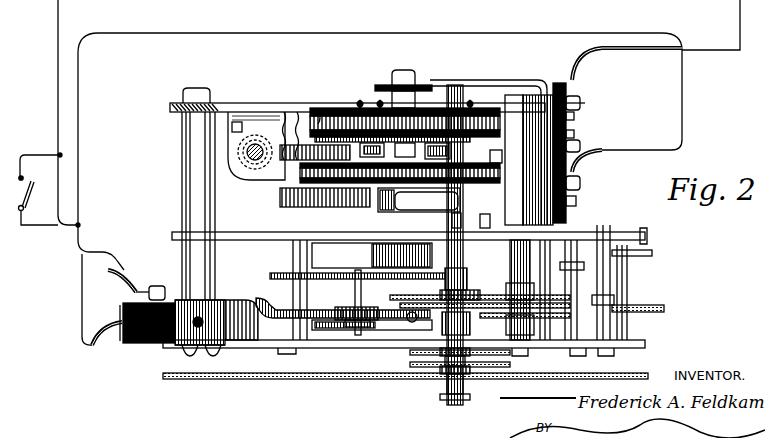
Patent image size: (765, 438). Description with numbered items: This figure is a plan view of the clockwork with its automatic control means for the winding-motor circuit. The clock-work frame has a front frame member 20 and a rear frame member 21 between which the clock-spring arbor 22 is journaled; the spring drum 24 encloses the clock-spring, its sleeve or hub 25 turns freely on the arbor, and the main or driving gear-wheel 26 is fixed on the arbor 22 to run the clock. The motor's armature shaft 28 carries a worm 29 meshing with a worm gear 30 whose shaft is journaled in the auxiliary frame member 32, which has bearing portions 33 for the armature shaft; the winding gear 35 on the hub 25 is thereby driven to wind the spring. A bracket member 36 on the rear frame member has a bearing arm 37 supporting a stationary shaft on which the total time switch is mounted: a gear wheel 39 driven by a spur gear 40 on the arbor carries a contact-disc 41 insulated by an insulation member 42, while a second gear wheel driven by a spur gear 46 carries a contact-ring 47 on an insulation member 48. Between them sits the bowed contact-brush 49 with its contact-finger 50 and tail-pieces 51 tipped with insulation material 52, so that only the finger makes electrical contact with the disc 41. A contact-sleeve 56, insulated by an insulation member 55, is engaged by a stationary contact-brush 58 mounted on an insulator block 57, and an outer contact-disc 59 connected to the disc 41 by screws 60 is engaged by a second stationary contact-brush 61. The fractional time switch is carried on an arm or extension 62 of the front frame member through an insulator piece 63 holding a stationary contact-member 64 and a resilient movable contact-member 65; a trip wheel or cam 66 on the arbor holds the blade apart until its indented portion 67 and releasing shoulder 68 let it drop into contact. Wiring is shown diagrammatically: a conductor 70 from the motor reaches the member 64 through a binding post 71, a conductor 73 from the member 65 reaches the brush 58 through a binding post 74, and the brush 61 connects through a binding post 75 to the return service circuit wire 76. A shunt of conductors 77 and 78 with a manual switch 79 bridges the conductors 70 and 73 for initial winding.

The front frame member 20 is at (592, 348).
The rear frame member 21 is at (236, 231).
The clock-spring arbor 22 is at (355, 294).
The spring drum 24 is at (322, 253).
The sleeve or hub 25 is at (350, 212).
The main or driving gear-wheel 26 is at (270, 276).
The armature shaft 28 is at (247, 153).
The worm 29 is at (240, 162).
The worm gear 30 is at (284, 112).
The auxiliary frame member 32 is at (223, 102).
The bearing portions 33 is at (236, 126).
The winding gear 35 is at (281, 206).
The bracket member 36 is at (566, 118).
The bearing arm 37 is at (425, 85).
The gear wheel 39 is at (545, 90).
The spur gear 40 is at (346, 108).
The contact-disc 41 is at (496, 146).
The insulation member 42 is at (572, 112).
The spur gear 46 is at (297, 112).
The contact-ring 47 is at (420, 143).
The insulation member 48 is at (568, 133).
The contact-brush 49 is at (462, 140).
The contact-finger 50 is at (440, 143).
The tail-pieces 51 is at (362, 100).
The insulation material 52 is at (382, 100).
The insulation member 55 is at (488, 210).
The contact-sleeve 56 is at (458, 210).
The insulator block 57 is at (580, 147).
The stationary contact-brush 58 is at (568, 200).
The outer contact-disc 59 is at (535, 80).
The screws 60 is at (320, 108).
The second stationary contact-brush 61 is at (510, 130).
The arm or extension 62 is at (252, 349).
The insulator piece 63 is at (142, 346).
The stationary contact-member 64 is at (283, 309).
The movable contact-member 65 is at (286, 350).
The trip wheel or cam 66 is at (346, 328).
The indented portion 67 is at (410, 323).
The trip or releasing shoulder 68 is at (395, 332).
The conductor 70 is at (57, 92).
The binding post 71 is at (155, 284).
The conductor 73 is at (82, 108).
The binding post 74 is at (582, 183).
The binding post 75 is at (582, 100).
The return service circuit wire 76 is at (714, 51).
The conductor 77 is at (44, 155).
The conductor 78 is at (34, 228).
The switch 79 is at (28, 190).